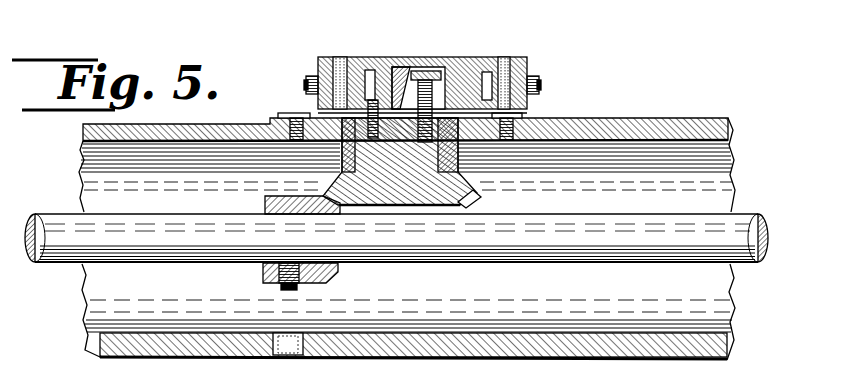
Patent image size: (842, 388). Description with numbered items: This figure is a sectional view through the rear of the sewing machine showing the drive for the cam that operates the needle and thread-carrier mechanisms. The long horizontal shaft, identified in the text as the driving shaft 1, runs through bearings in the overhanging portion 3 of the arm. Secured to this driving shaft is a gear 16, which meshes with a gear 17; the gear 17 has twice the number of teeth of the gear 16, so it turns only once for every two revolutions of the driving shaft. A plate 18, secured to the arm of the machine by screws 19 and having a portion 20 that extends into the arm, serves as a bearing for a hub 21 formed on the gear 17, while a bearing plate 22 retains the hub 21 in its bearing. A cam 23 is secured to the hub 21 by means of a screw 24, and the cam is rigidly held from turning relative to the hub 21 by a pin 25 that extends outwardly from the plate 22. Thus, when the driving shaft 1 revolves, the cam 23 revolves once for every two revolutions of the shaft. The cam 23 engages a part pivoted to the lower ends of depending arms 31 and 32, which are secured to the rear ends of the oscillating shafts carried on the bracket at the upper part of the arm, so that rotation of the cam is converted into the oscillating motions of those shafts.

The bed of the machine 1 is at (600, 262).
The overhanging portion of the arm 3 is at (398, 345).
The gear 16 is at (263, 270).
The gear 17 is at (472, 198).
The plate 18 is at (268, 122).
The screws 19 is at (294, 113).
The portion 20 is at (337, 153).
The hub 21 is at (420, 176).
The bearing plate 22 is at (322, 110).
The cam 23 is at (455, 78).
The screw 24 is at (424, 72).
The pin 25 is at (398, 70).
The depending arm 31 is at (350, 57).
The depending arm 32 is at (534, 84).